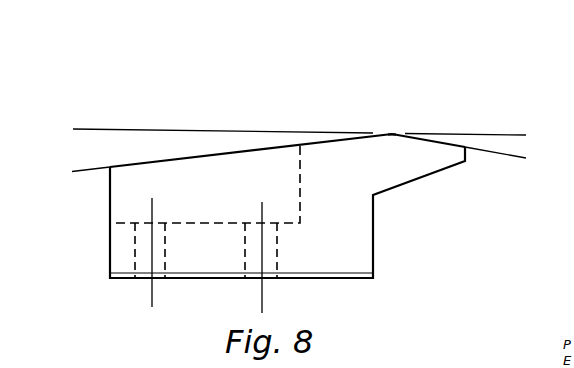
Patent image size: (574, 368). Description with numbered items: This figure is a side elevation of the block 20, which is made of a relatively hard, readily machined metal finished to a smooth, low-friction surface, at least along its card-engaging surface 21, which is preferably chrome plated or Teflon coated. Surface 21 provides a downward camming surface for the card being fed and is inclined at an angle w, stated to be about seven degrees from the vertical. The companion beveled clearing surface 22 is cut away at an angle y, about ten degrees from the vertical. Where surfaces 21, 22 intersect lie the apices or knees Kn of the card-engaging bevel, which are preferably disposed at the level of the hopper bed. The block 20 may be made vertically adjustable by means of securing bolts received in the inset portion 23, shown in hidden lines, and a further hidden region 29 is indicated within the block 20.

The block 20 is at (106, 229).
The card-engaging surface 21 is at (156, 157).
The beveled clearing surface 22 is at (452, 144).
The inset portion 23 is at (184, 222).
The hidden recess region 29 is at (222, 192).
The knees Kn is at (390, 132).
The inclination angle of surface 21 w is at (86, 107).
The inclination angle of surface 22 y is at (521, 119).